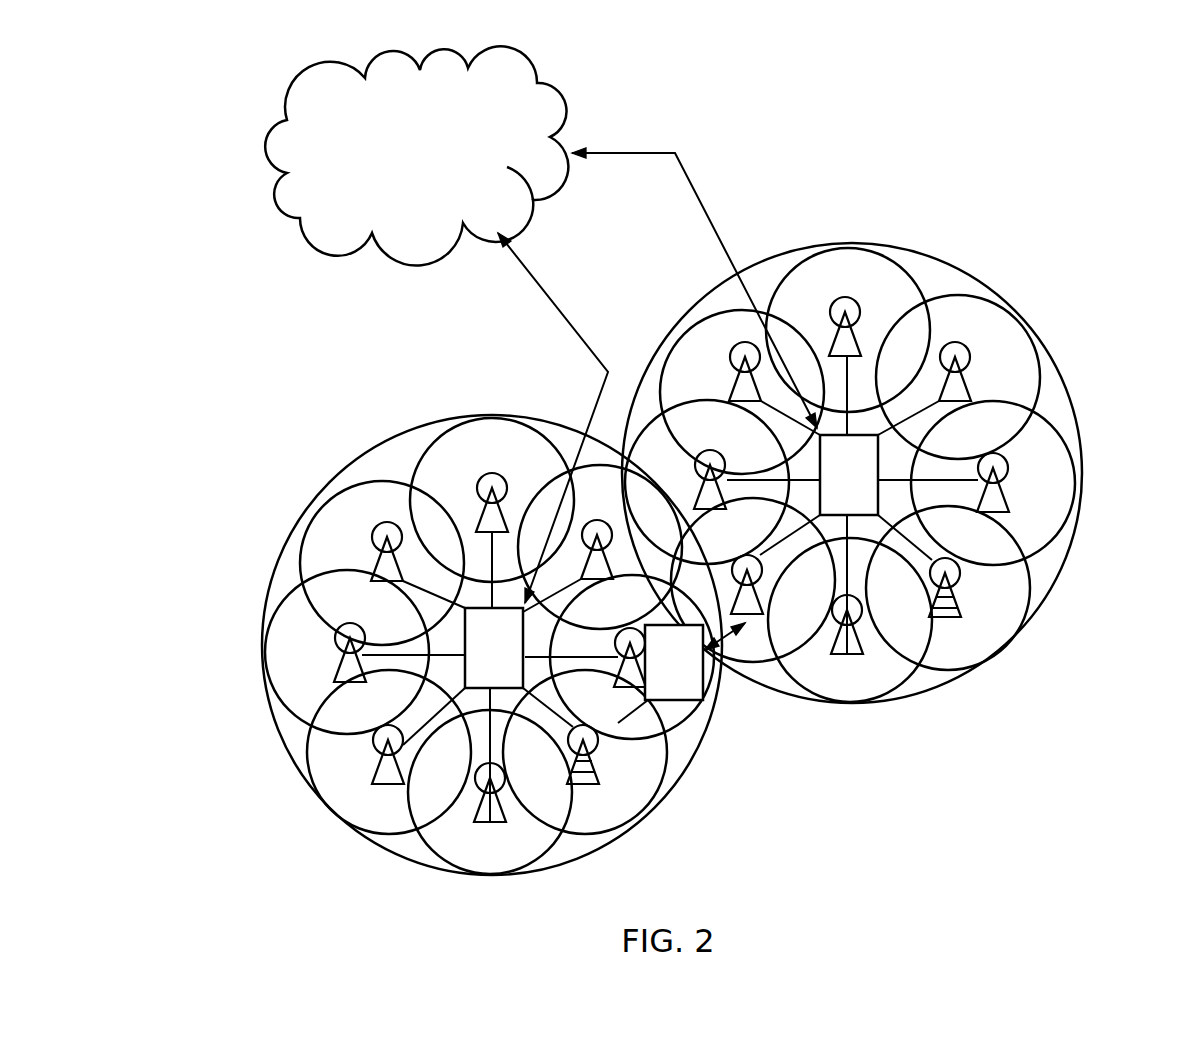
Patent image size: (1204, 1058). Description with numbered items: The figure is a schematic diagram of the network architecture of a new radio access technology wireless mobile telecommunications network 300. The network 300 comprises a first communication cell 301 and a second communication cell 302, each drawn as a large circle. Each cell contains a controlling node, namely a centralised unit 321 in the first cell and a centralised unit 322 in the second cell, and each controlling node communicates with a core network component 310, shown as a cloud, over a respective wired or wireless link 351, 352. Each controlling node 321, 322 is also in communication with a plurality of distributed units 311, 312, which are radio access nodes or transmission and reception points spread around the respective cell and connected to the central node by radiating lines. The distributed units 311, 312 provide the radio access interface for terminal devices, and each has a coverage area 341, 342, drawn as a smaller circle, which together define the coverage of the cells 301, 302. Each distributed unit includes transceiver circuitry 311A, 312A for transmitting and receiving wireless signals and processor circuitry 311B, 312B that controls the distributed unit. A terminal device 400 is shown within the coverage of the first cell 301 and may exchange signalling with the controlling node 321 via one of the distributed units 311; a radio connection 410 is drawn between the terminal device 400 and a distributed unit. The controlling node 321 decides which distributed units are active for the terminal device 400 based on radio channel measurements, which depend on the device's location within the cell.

The new RAT wireless mobile telecommunications network/system 300 is at (845, 125).
The first communication cell 301 is at (405, 432).
The second communication cell 302 is at (790, 250).
The core network component 310 is at (416, 155).
The distributed units 311 is at (377, 767).
The transceiver circuitry 311A is at (598, 753).
The processor circuitry 311B is at (602, 772).
The distributed units 312 is at (1007, 470).
The transceiver circuitry 312A is at (953, 590).
The processor circuitry 312B is at (960, 610).
The controlling node 321 is at (490, 677).
The controlling node 322 is at (852, 505).
The coverage area 341 is at (270, 597).
The coverage area 342 is at (957, 295).
The wired or wireless link 351 is at (552, 295).
The wired or wireless link 352 is at (637, 153).
The terminal device 400 is at (673, 702).
The wireless link between device and access point 410 is at (747, 625).